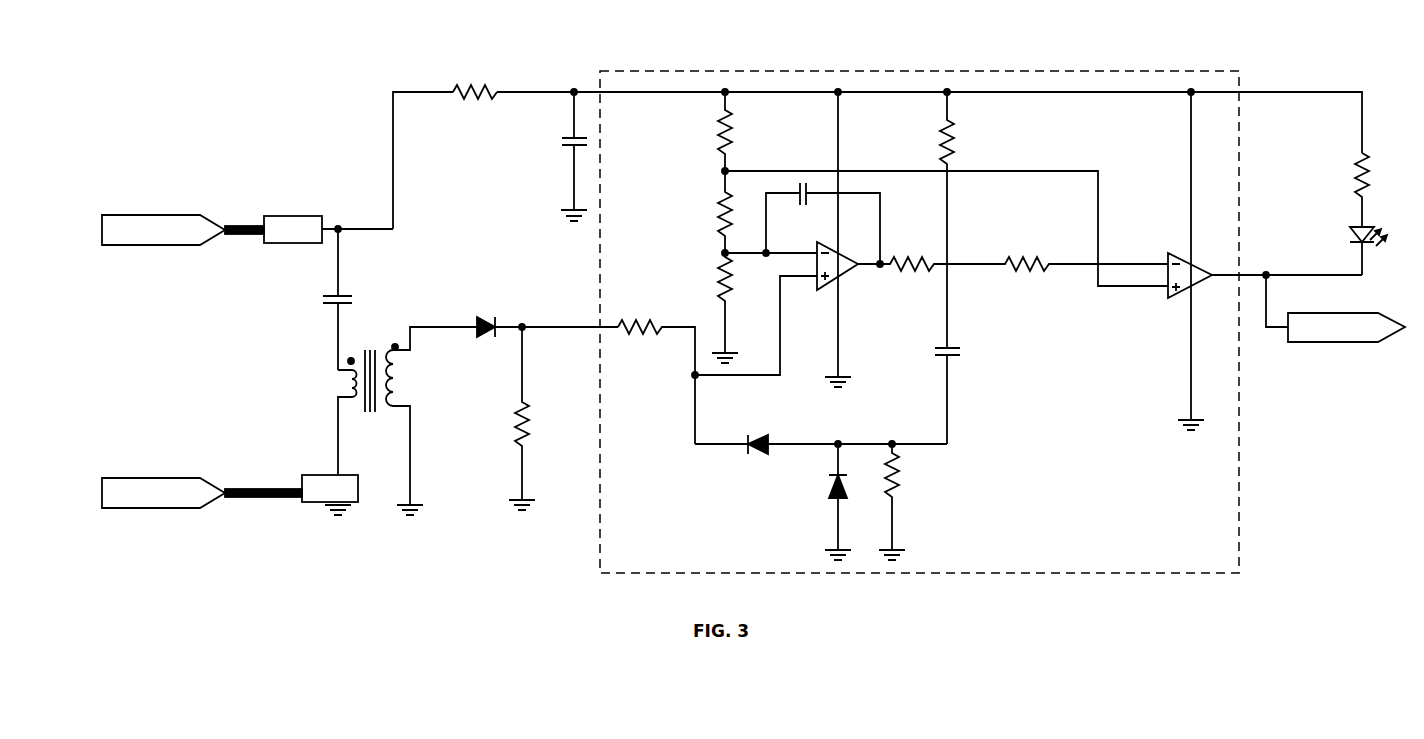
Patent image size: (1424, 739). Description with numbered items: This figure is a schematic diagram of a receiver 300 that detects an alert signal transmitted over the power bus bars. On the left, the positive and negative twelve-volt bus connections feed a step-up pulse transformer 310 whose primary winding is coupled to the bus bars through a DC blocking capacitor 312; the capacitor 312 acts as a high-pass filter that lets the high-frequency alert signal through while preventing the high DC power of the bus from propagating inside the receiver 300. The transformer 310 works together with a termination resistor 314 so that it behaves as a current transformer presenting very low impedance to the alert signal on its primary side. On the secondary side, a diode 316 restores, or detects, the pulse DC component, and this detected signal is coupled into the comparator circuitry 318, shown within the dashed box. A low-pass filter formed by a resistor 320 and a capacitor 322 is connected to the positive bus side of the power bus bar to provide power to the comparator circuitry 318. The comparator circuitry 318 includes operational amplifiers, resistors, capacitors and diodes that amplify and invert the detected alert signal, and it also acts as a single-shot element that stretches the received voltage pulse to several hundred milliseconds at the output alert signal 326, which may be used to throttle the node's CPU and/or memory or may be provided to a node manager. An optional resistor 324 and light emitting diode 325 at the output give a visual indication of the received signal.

The receiver 300 is at (318, 55).
The DC blocking capacitor 312 is at (343, 293).
The step-up pulse transformer 310 is at (375, 337).
The resistor 320 is at (488, 88).
The capacitor 322 is at (563, 145).
The comparator circuitry 318 is at (648, 70).
The diode 316 is at (483, 337).
The termination resistor 314 is at (532, 415).
The resistor 324 is at (1357, 160).
The light emitting diode 325 is at (1350, 232).
The output alert signal 326 is at (1332, 343).